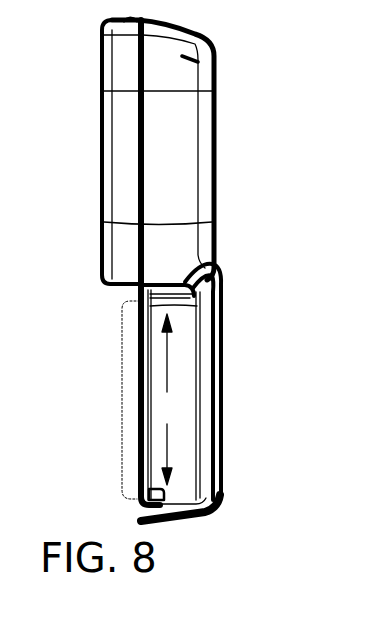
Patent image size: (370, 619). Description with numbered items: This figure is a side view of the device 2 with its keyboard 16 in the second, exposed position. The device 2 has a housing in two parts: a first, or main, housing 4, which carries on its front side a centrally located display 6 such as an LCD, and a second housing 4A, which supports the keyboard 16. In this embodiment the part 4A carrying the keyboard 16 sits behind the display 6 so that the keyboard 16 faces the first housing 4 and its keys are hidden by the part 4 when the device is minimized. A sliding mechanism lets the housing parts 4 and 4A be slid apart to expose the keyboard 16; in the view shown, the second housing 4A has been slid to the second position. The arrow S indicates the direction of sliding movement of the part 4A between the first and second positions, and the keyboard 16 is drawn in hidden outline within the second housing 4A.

The device 2 is at (27, 58).
The first housing 4 is at (218, 124).
The second housing 4A is at (222, 397).
The display 6 is at (98, 168).
The keyboard 16 is at (122, 410).
The arrow S is at (168, 399).